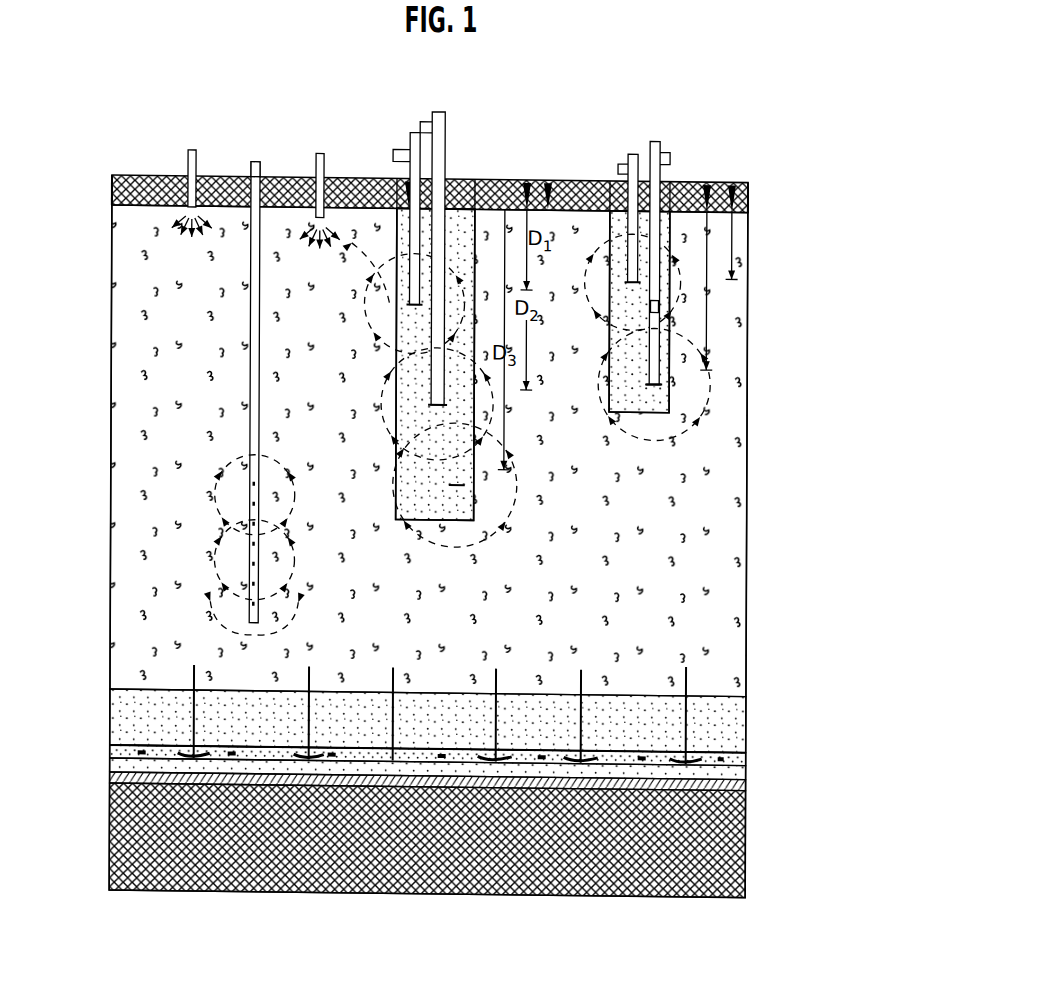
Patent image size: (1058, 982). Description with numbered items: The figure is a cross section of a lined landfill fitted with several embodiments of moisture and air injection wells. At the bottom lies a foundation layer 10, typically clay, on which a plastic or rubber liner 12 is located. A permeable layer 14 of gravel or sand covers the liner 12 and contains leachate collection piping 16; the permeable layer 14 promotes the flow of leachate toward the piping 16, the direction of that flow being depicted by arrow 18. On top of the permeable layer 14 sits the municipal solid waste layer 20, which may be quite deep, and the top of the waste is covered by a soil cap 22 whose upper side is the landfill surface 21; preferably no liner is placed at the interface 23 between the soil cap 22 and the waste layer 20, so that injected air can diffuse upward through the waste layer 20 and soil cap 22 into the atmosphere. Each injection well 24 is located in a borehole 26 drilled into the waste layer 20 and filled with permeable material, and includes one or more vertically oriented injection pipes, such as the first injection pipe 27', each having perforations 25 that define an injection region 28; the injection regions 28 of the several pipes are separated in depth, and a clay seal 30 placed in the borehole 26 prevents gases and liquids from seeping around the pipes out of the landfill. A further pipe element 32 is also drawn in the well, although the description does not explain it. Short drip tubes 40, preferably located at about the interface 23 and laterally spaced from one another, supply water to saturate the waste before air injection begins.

The foundation layer 10 is at (745, 837).
The liner 12 is at (745, 773).
The permeable layer 14 is at (735, 700).
The leachate collection piping 16 is at (745, 749).
The arrow 18 is at (196, 707).
The municipal solid waste layer 20 is at (735, 485).
The landfill surface 21 is at (720, 174).
The soil cap 22 is at (750, 192).
The interface 23 is at (112, 203).
The injection well 24 is at (467, 174).
The perforations 25 is at (252, 245).
The borehole 26 is at (398, 232).
The first injection pipe 27' is at (665, 270).
The injection region 28 is at (256, 166).
The clay seal 30 is at (612, 174).
The injection pipe 32 is at (409, 130).
The drip tubes 40 is at (177, 172).